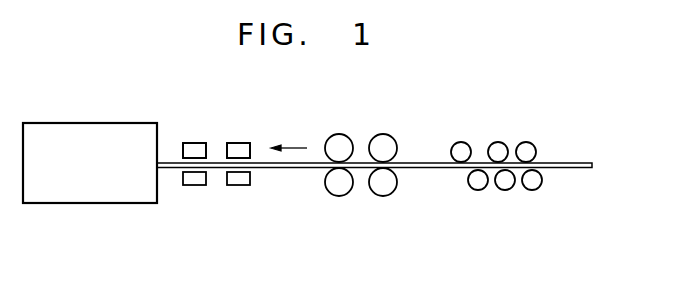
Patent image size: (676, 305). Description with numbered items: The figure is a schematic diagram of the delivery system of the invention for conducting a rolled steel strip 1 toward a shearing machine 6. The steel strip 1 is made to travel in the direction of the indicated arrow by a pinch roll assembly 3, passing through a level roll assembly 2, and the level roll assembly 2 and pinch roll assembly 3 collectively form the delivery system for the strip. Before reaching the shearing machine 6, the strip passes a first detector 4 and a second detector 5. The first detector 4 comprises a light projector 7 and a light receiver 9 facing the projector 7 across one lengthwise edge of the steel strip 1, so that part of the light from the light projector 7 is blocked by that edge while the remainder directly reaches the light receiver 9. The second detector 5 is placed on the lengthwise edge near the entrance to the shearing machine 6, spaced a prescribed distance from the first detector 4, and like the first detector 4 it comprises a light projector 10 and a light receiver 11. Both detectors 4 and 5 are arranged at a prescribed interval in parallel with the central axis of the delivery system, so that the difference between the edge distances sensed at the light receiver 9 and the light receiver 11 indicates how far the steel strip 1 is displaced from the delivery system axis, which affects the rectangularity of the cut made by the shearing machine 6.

The rolled steel strip 1 is at (287, 169).
The level roll assembly 2 is at (479, 149).
The pinch roll assembly 3 is at (361, 149).
The first detector 4 is at (236, 143).
The second detector 5 is at (190, 143).
The shearing machine 6 is at (84, 204).
The light projector 7 is at (236, 185).
The light receiver 9 is at (245, 143).
The light projector 10 is at (191, 185).
The light receiver 11 is at (200, 143).